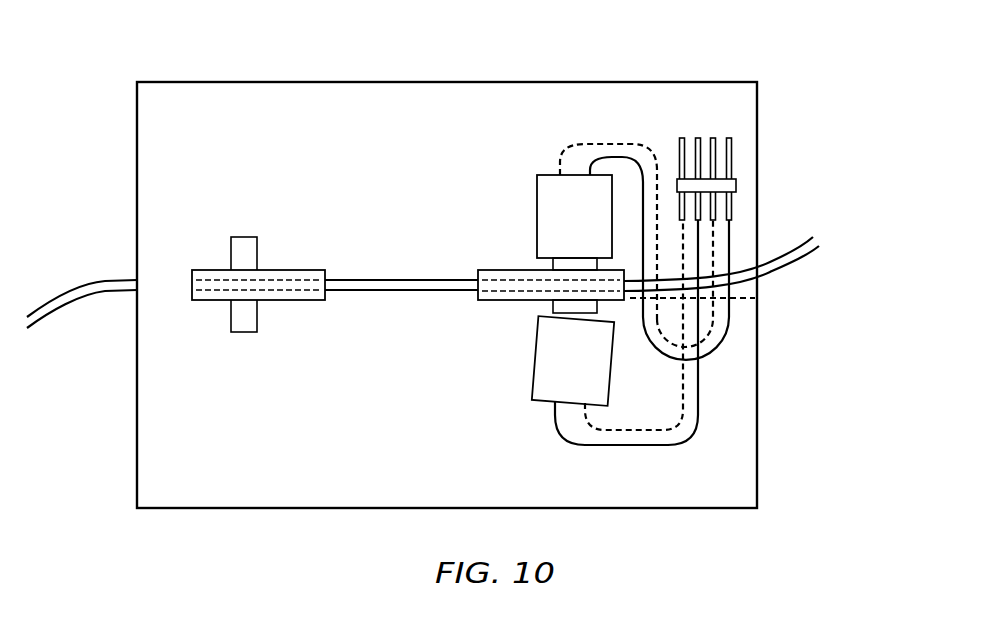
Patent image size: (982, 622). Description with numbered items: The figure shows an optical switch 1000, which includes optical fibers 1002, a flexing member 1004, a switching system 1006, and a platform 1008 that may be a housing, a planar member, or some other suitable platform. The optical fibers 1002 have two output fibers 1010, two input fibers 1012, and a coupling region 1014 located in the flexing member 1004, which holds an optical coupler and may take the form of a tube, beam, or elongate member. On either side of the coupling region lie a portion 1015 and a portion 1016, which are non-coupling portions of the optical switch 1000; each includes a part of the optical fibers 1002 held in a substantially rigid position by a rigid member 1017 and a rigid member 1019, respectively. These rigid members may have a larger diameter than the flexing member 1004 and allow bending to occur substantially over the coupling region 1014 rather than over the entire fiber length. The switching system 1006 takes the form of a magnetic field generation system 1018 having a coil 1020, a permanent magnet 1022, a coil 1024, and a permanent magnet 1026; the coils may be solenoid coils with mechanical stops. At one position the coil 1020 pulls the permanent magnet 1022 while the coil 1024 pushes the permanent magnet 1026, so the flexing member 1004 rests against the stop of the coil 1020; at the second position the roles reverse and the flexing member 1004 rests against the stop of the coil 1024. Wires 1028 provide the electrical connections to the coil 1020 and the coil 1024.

The optical switch 1000 is at (270, 79).
The optical fibers 1002 is at (96, 282).
The flexing member 1004 is at (415, 292).
The switching system 1006 is at (565, 121).
The platform 1008 is at (743, 412).
The output fibers 1010 is at (27, 521).
The input fibers 1012 is at (762, 295).
The coupling region 1014 is at (318, 520).
The portion 1015 is at (478, 456).
The portion 1016 is at (261, 268).
The rigid member 1017 is at (502, 303).
The magnetic field generation system 1018 is at (648, 121).
The rigid member 1019 is at (289, 302).
The coil 1020 is at (537, 188).
The permanent magnet 1022 is at (552, 264).
The coil 1024 is at (535, 367).
The permanent magnet 1026 is at (598, 306).
The wires 1028 is at (677, 127).